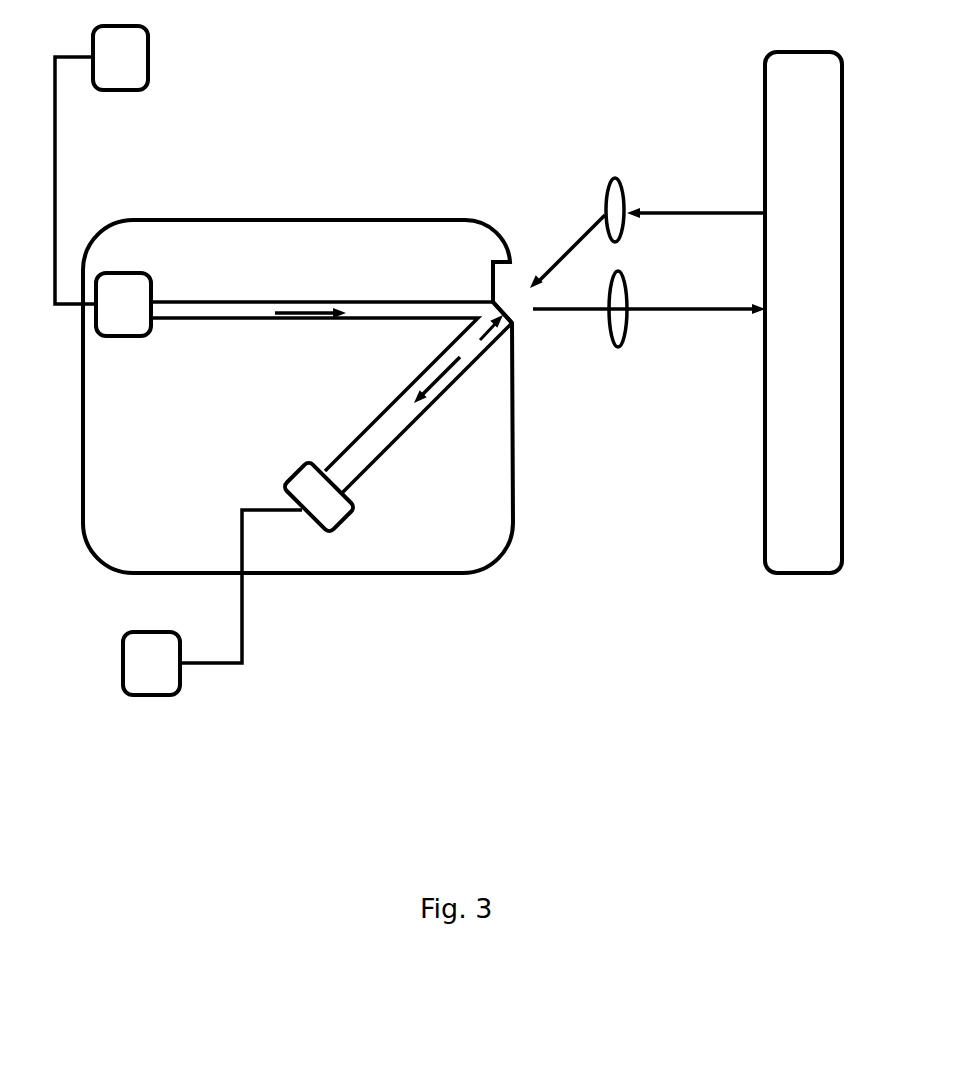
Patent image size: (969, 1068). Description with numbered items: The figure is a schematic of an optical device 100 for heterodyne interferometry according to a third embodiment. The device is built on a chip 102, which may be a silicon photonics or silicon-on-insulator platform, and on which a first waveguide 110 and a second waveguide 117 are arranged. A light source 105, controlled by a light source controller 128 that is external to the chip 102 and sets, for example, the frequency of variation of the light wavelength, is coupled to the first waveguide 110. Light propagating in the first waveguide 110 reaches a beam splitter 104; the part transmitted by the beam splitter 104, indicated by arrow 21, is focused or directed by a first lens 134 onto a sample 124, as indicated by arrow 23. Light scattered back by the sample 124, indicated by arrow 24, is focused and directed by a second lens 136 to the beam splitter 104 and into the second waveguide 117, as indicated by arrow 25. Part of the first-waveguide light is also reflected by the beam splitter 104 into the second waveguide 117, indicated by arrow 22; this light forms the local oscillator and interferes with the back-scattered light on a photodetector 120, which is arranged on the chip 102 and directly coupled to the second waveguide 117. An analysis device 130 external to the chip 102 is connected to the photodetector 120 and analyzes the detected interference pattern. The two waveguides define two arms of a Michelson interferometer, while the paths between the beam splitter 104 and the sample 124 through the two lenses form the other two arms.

The optical device 100 is at (392, 182).
The chip 102 is at (298, 396).
The light source 105 is at (128, 272).
The first waveguide 110 is at (389, 312).
The arrow 21 is at (313, 310).
The arrow 22 is at (441, 381).
The beam splitter 104 is at (505, 330).
The second waveguide 117 is at (372, 450).
The photodetector 120 is at (337, 518).
The light source controller 128 is at (148, 55).
The analysis device 130 is at (150, 695).
The first lens 134 is at (617, 347).
The second lens 136 is at (613, 177).
The arrow 24 is at (707, 213).
The arrow 23 is at (710, 309).
The arrow 25 is at (565, 250).
The sample 124 is at (765, 518).